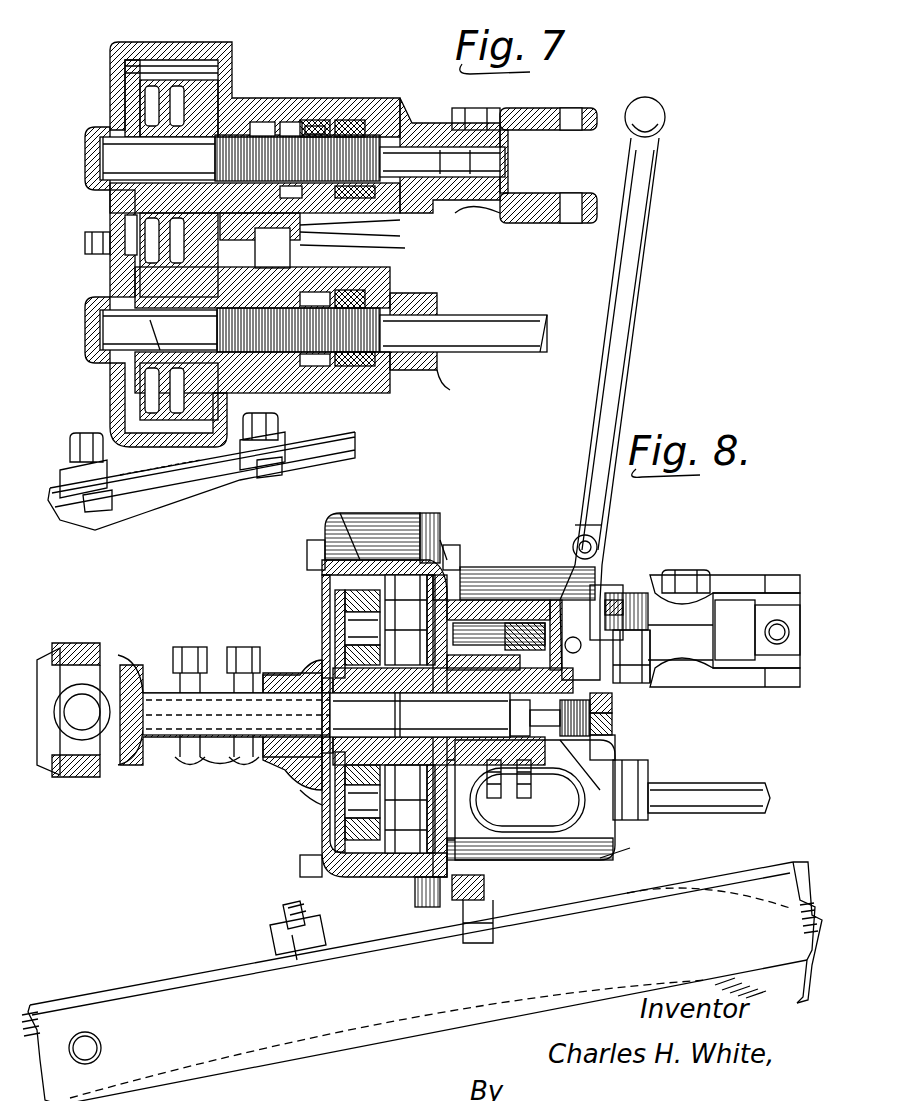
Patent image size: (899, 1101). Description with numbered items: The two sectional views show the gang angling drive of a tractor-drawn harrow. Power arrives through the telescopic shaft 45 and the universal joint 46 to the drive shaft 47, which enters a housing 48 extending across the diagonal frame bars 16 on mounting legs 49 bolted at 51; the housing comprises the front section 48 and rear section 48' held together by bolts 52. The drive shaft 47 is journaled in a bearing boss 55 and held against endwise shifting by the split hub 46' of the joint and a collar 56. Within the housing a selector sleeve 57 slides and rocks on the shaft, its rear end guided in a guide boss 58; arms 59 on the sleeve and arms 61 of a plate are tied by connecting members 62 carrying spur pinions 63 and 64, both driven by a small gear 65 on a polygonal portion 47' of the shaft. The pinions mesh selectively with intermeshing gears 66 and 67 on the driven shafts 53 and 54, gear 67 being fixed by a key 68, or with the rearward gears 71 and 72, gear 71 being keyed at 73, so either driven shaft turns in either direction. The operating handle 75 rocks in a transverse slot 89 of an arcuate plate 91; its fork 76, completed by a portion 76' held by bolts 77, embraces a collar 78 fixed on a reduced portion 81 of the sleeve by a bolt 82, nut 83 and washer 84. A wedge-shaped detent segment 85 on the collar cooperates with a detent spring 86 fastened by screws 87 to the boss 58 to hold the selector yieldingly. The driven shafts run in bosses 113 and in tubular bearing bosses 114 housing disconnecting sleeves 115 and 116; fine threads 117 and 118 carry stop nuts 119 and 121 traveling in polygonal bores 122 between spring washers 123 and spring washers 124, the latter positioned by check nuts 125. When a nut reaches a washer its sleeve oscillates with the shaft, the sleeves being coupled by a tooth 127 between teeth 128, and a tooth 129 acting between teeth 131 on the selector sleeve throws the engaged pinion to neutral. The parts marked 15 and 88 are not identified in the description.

In FIG. 7, the frame rail 15 is at (58, 505).
In FIG. 8, the frame rail 15 is at (395, 1020).
In FIG. 8, the diagonal frame bar 16 is at (112, 1003).
In FIG. 8, the telescopic shaft 45 is at (87, 724).
In FIG. 8, the universal joint 46 is at (225, 736).
In FIG. 8, the split hub 46' is at (194, 797).
In FIG. 8, the drive shaft 47 is at (216, 721).
In FIG. 8, the polygonal portion 47' is at (505, 608).
In FIG. 7, the housing 48 is at (224, 89).
In FIG. 8, the housing 48 is at (384, 680).
In FIG. 7, the rear housing section 48' is at (204, 77).
In FIG. 8, the rear housing section 48' is at (464, 519).
In FIG. 8, the mounting legs 49 is at (320, 905).
In FIG. 8, the bolts 51 is at (285, 920).
In FIG. 8, the bolts 52 is at (462, 570).
In FIG. 7, the driven shaft 53 is at (438, 386).
In FIG. 7, the driven shaft 54 is at (420, 150).
In FIG. 8, the bearing boss 55 is at (285, 675).
In FIG. 8, the collar 56 is at (236, 714).
In FIG. 8, the selector sleeve 57 is at (487, 865).
In FIG. 8, the guide boss 58 is at (565, 770).
In FIG. 8, the arms 59 is at (425, 515).
In FIG. 8, the arms 61 is at (335, 600).
In FIG. 8, the connecting members 62 is at (345, 625).
In FIG. 8, the spur pinion 63 is at (360, 878).
In FIG. 8, the spur pinion 64 is at (370, 545).
In FIG. 8, the small gear 65 is at (300, 780).
In FIG. 7, the lower gear 66 is at (118, 402).
In FIG. 7, the upper gear 67 is at (118, 226).
In FIG. 8, the upper gear 67 is at (312, 540).
In FIG. 7, the key 68 is at (120, 208).
In FIG. 7, the lower gear 71 is at (200, 430).
In FIG. 7, the upper gear 72 is at (196, 78).
In FIG. 7, the key 73 is at (145, 334).
In FIG. 8, the operating handle 75 is at (622, 402).
In FIG. 8, the fork 76 is at (656, 670).
In FIG. 8, the yoke arm portion 76' is at (620, 588).
In FIG. 8, the bolts 77 is at (600, 530).
In FIG. 8, the collar 78 is at (625, 690).
In FIG. 8, the reduced portion 81 is at (580, 790).
In FIG. 8, the bolt 82 is at (585, 722).
In FIG. 8, the nut 83 is at (600, 745).
In FIG. 8, the washer 84 is at (585, 695).
In FIG. 8, the detent segment 85 is at (650, 778).
In FIG. 8, the detent spring 86 is at (540, 860).
In FIG. 8, the screws 87 is at (527, 796).
In FIG. 8, the bracket lug 88 is at (625, 850).
In FIG. 8, the transverse slot 89 is at (670, 578).
In FIG. 8, the arcuate plate 91 is at (695, 570).
In FIG. 7, the bosses 113 is at (88, 128).
In FIG. 7, the tubular bearing bosses 114 is at (405, 112).
In FIG. 8, the tubular bearing bosses 114 is at (705, 580).
In FIG. 7, the disconnecting sleeve 115 is at (300, 240).
In FIG. 7, the disconnecting sleeve 116 is at (318, 120).
In FIG. 7, the fine thread 117 is at (330, 250).
In FIG. 7, the fine thread 118 is at (322, 120).
In FIG. 7, the stop nut 119 is at (240, 470).
In FIG. 7, the stop nut 121 is at (250, 120).
In FIG. 7, the polygonal bores 122 is at (290, 120).
In FIG. 7, the spring washers 123 is at (240, 243).
In FIG. 7, the spring washers 124 is at (355, 118).
In FIG. 7, the check nuts 125 is at (372, 120).
In FIG. 7, the tooth 127 is at (300, 230).
In FIG. 7, the teeth 128 is at (400, 240).
In FIG. 8, the tooth 129 is at (578, 545).
In FIG. 8, the teeth 131 is at (460, 716).